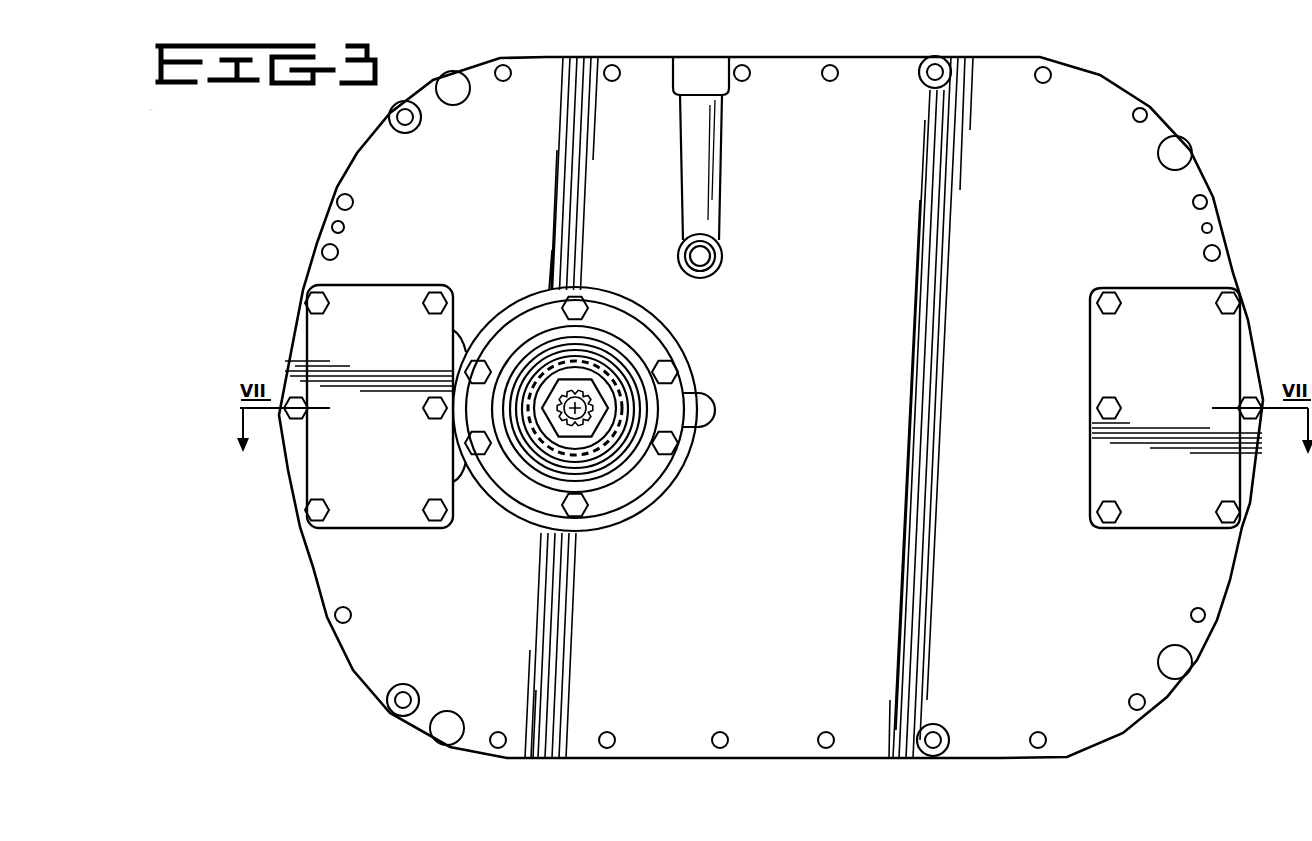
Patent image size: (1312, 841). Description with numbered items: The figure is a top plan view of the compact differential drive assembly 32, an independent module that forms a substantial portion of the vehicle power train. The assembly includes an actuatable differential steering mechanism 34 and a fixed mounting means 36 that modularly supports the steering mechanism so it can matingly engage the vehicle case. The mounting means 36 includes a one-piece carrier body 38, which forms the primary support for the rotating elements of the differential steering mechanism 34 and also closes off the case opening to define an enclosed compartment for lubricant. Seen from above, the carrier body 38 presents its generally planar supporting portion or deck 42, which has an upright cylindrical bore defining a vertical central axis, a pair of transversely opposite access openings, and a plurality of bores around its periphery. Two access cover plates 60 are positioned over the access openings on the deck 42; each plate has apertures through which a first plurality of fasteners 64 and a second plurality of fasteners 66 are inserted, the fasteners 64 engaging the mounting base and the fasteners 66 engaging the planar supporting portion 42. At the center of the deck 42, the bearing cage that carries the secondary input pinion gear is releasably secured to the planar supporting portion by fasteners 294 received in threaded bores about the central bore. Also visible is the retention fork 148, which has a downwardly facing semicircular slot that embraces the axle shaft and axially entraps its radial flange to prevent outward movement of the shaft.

The differential drive assembly 32 is at (292, 221).
The differential steering mechanism 34 is at (608, 370).
The mounting means 36 is at (333, 172).
The carrier body 38 is at (1173, 188).
The deck 42 is at (840, 282).
The access cover plates 60 is at (392, 478).
The first plurality of fasteners 64 is at (315, 303).
The second plurality of fasteners 66 is at (440, 302).
The retention fork 148 is at (567, 418).
The flange bolt 294 is at (674, 370).